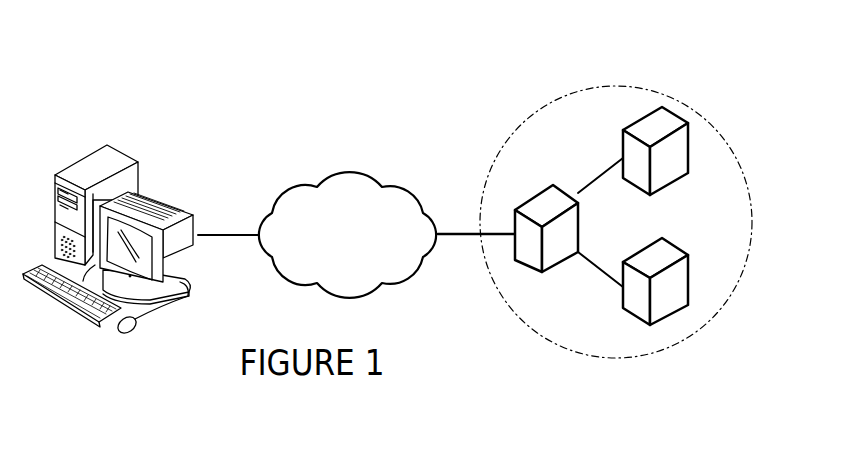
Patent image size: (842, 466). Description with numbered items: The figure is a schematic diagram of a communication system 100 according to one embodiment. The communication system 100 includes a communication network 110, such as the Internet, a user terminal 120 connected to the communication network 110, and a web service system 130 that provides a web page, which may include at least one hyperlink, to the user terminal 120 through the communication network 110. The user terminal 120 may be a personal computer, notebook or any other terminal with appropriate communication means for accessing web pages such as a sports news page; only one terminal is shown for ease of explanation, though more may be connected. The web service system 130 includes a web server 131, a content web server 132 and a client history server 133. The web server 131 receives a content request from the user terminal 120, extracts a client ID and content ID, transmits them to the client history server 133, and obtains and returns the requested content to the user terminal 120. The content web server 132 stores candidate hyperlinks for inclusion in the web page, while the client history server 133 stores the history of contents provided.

The communication system 100 is at (311, 32).
The communication network 110 is at (347, 171).
The user terminal 120 is at (88, 152).
The web service system 130 is at (552, 97).
The web server 131 is at (541, 185).
The content web server 132 is at (641, 112).
The client history server 133 is at (668, 318).